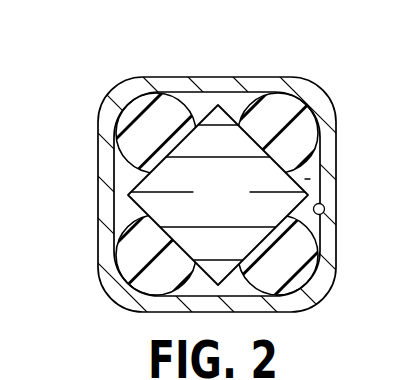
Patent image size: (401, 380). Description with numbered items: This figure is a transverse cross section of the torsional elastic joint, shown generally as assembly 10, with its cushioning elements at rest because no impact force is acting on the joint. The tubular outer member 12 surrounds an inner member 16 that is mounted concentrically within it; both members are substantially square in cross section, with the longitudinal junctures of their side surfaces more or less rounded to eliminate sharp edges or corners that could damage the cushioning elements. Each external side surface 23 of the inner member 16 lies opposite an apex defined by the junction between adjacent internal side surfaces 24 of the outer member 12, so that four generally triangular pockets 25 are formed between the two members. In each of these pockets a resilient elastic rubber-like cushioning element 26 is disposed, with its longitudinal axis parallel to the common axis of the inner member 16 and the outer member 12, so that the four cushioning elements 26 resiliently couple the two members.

The roller clutch assembly 10 is at (200, 174).
The outer member 12 is at (200, 173).
The inner member 16 is at (242, 208).
The external side surface 23 is at (305, 179).
The internal side surfaces 24 is at (323, 212).
The generally triangular pockets 25 is at (120, 178).
The resilient elastic rubber-like cushioning elements 26 is at (120, 113).